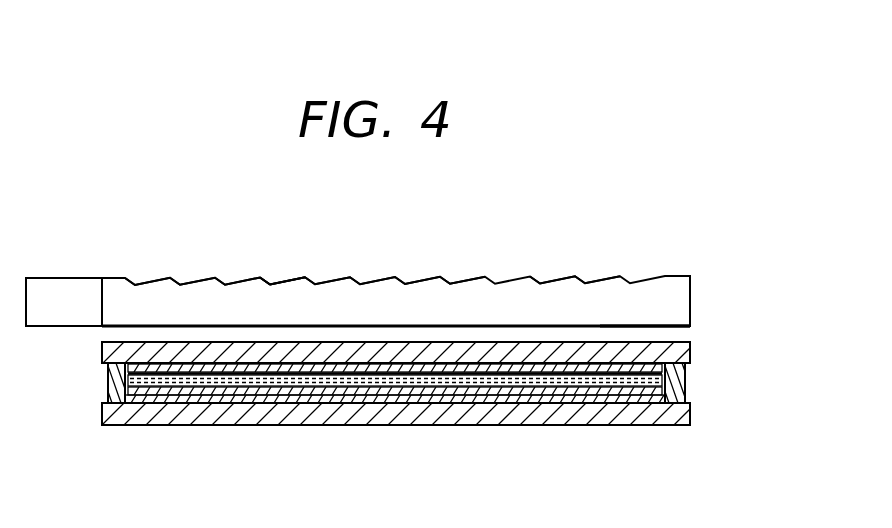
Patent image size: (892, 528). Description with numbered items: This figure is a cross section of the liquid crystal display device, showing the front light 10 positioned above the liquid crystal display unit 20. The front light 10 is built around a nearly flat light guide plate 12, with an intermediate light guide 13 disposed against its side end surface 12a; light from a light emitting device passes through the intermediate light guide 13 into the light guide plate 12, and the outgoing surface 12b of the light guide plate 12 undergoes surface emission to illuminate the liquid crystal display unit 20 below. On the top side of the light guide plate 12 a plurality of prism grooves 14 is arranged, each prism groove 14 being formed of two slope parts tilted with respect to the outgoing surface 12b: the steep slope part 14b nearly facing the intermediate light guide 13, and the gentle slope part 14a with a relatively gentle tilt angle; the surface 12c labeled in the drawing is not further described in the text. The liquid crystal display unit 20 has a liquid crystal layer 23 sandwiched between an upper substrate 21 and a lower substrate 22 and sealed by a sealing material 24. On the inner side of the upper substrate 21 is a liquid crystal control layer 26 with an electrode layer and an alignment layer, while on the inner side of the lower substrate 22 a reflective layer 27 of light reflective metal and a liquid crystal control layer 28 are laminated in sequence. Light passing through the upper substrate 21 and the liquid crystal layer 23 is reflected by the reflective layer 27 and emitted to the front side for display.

The front light 10 is at (678, 277).
The light guide plate 12 is at (675, 297).
The side end surface 12a is at (100, 298).
The outgoing surface 12b is at (682, 327).
The reflecting surface (upper surface) 12c is at (562, 277).
The intermediate light guide 13 is at (45, 315).
The prism groove 14 is at (320, 197).
The gentle slope part 14a is at (298, 278).
The steep slope part 14b is at (268, 278).
The liquid crystal display unit 20 is at (630, 426).
The upper substrate 21 is at (690, 352).
The lower substrate 22 is at (690, 413).
The liquid crystal layer 23 is at (664, 373).
The sealing material 24 is at (118, 403).
The liquid crystal control layer 26 is at (425, 365).
The reflective layer 27 is at (522, 399).
The liquid crystal control layer 28 is at (585, 391).